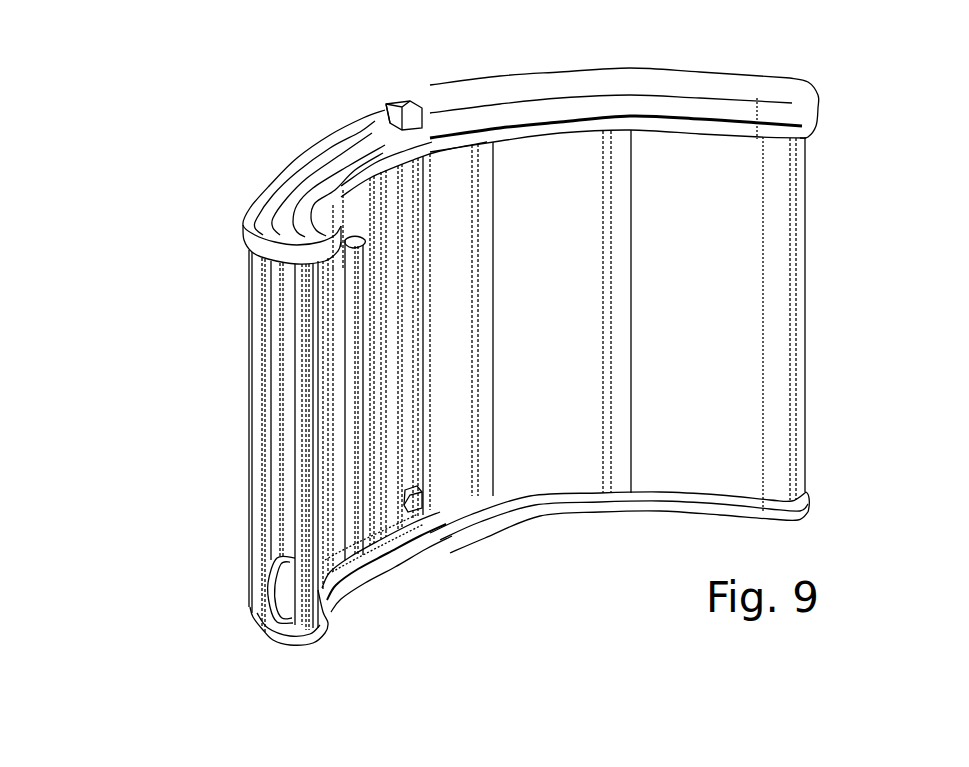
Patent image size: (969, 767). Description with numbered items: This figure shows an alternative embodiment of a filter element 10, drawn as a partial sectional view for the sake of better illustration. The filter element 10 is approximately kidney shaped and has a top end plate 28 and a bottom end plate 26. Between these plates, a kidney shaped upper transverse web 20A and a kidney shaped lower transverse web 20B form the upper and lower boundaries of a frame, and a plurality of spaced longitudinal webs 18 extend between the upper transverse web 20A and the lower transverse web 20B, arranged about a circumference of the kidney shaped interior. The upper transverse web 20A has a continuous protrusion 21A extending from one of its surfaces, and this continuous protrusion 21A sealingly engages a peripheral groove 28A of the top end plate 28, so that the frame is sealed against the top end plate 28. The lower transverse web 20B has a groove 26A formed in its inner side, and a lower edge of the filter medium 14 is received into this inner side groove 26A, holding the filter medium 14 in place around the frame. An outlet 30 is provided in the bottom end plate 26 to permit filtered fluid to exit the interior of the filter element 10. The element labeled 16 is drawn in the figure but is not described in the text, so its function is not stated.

The filter element 10 is at (178, 158).
The filter medium 14 is at (440, 174).
The end post 16 is at (258, 413).
The longitudinal webs 18 is at (612, 289).
The upper transverse web 20A is at (546, 129).
The lower transverse web 20B is at (395, 533).
The continuous protrusion 21A is at (303, 142).
The bottom end plate 26 is at (583, 513).
The groove 26A is at (402, 528).
The top end plate 28 is at (768, 94).
The peripheral groove 28A is at (392, 116).
The outlet 30 is at (406, 500).